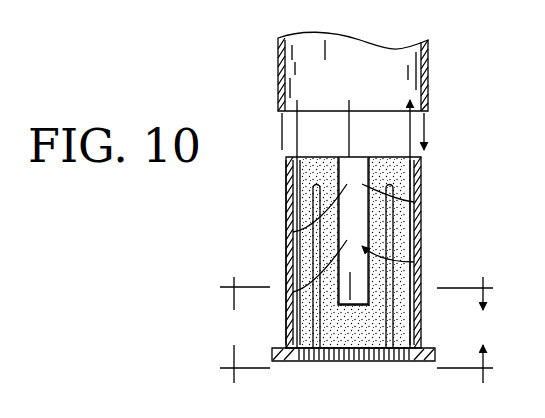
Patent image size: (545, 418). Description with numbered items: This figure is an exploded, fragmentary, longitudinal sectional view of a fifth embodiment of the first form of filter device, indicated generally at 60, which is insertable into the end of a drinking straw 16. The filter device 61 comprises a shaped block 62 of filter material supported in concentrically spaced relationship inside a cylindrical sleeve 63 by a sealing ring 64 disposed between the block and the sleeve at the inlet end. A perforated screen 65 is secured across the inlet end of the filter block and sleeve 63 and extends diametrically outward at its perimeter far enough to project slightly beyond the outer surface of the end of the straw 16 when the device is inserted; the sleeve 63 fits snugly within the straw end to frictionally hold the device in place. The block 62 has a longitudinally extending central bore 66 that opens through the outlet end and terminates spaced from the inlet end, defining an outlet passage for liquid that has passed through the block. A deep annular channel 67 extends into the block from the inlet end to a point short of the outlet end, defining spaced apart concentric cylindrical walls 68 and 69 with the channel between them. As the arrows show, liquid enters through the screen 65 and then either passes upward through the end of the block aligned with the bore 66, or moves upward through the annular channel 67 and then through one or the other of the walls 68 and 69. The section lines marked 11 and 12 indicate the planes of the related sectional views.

The section line 11- 11 is at (357, 364).
The section line 12- 12 is at (357, 293).
The straw 16 is at (278, 85).
The fifth embodiment of the first form of the invention 60 is at (443, 152).
The filter device 61 is at (283, 238).
The block of filter material 62 is at (412, 196).
The cylindrical sleeve 63 is at (421, 216).
The sealing ring 64 is at (290, 322).
The perforated screen 65 is at (375, 362).
The central bore 66 is at (358, 186).
The annular channel 67 is at (322, 232).
The concentric cylindrical wall 68 is at (338, 377).
The concentric cylindrical wall 69 is at (362, 250).